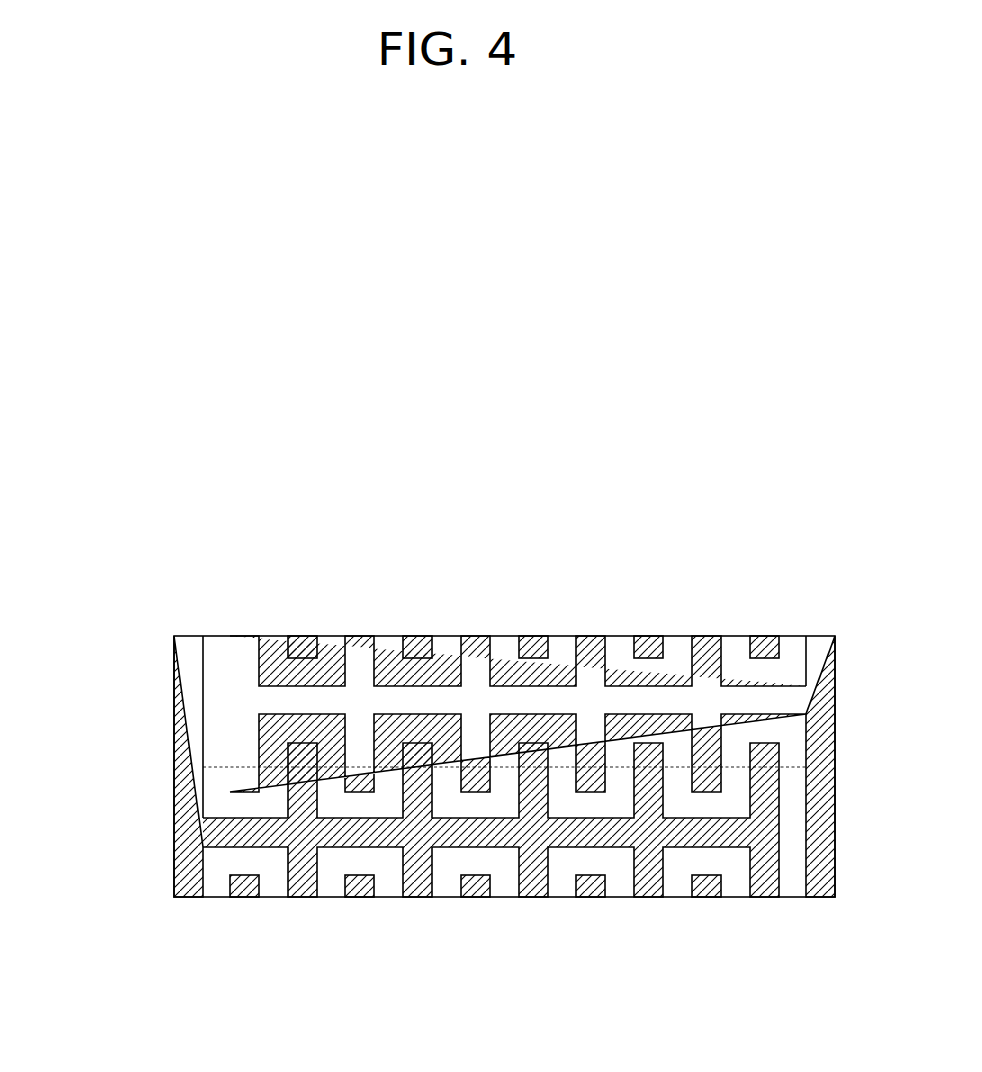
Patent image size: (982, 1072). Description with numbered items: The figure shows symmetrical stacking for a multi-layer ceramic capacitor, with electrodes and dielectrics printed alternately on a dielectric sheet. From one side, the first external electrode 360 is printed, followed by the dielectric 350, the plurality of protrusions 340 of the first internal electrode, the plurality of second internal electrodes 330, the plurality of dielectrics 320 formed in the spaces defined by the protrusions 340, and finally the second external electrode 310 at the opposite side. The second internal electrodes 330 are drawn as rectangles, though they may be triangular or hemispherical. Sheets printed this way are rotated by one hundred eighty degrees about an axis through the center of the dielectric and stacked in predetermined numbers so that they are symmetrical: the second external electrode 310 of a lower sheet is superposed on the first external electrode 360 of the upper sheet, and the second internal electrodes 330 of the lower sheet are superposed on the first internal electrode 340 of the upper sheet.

The second external electrode 310 is at (825, 633).
The dielectric 320 is at (790, 635).
The second internal electrode 330 is at (763, 635).
The protrusions of the first internal electrode 340 is at (705, 635).
The dielectric 350 is at (216, 657).
The first external electrode 360 is at (173, 668).